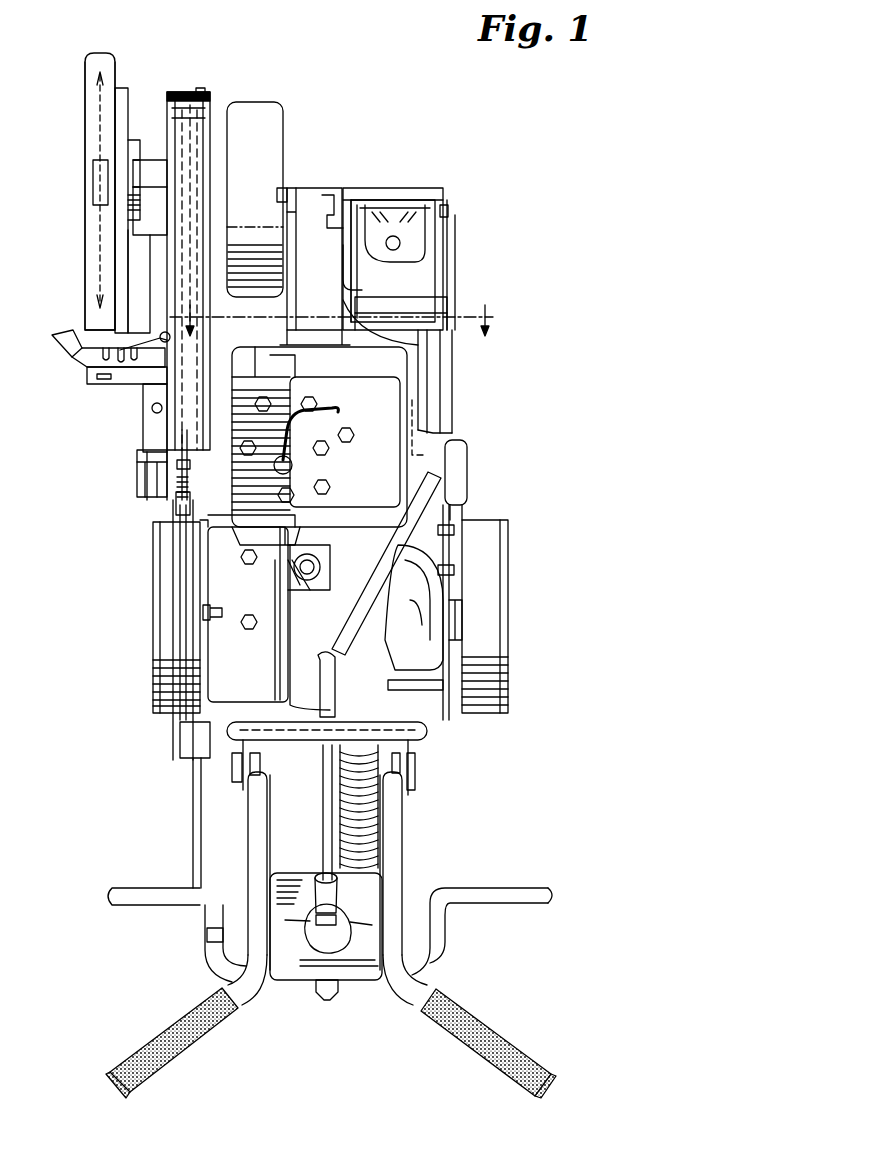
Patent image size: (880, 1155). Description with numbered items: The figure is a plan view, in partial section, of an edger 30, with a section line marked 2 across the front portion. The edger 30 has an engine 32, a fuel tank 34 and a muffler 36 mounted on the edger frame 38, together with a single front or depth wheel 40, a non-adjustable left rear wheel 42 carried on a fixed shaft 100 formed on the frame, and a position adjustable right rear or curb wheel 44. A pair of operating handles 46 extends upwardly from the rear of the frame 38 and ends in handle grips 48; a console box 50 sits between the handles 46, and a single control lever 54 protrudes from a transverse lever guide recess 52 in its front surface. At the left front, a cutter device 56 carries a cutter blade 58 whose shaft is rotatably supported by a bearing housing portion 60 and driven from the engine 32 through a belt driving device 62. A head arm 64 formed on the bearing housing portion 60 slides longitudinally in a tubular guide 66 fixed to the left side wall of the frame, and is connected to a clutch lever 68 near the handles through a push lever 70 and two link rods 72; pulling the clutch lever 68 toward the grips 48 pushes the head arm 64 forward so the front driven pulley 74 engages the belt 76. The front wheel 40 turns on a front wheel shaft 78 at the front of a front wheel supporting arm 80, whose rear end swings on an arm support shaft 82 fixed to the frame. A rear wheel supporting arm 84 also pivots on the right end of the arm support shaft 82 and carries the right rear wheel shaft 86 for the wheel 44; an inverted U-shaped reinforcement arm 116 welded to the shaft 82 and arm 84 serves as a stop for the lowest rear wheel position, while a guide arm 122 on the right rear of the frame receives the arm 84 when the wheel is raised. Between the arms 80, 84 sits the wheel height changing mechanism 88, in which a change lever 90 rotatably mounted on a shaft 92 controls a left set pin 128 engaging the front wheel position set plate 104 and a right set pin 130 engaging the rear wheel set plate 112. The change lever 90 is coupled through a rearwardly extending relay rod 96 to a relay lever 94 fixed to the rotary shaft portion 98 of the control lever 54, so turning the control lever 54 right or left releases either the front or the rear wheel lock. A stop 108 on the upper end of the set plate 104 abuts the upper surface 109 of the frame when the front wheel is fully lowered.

The edger 30 is at (518, 135).
The engine 32 is at (319, 446).
The fuel tank 34 is at (440, 640).
The muffler 36 is at (247, 608).
The edger frame 38 is at (508, 690).
The front wheel 40 is at (250, 102).
The left rear wheel 42 is at (153, 660).
The right rear wheel 44 is at (508, 528).
The operating handles 46 is at (248, 860).
The handle grips 48 is at (155, 1028).
The console box 50 is at (362, 985).
The lever guide recess 52 is at (298, 932).
The control lever 54 is at (322, 878).
The cutter device 56 is at (72, 62).
The cutter blade 58 is at (85, 92).
The bearing housing portion 60 is at (152, 160).
The belt driving device 62 is at (160, 385).
The head arm 64 is at (155, 260).
The tubular guide 66 is at (182, 445).
The clutch lever 68 is at (205, 962).
The push lever 70 is at (138, 472).
The link rods 72 is at (185, 735).
The front driven pulley 74 is at (196, 92).
The belt 76 is at (185, 95).
The front wheel shaft 78 is at (278, 200).
The front wheel supporting arm 80 is at (296, 190).
The arm support shaft 82 is at (287, 312).
The rear wheel supporting arm 84 is at (453, 390).
The right rear wheel shaft 86 is at (420, 730).
The wheel height changing mechanism 88 is at (388, 152).
The change lever 90 is at (395, 210).
The shaft 92 is at (391, 250).
The relay lever 94 is at (372, 644).
The relay rod 96 is at (455, 506).
The rotary shaft portion 98 is at (340, 786).
The fixed shaft 100 is at (218, 608).
The front wheel position set plate 104 is at (343, 240).
The stop 108 is at (398, 344).
The upper surface 109 is at (343, 260).
The rear wheel set plate 112 is at (450, 238).
The reinforcement arm 116 is at (400, 300).
The guide arm 122 is at (450, 555).
The set pin 128 is at (355, 250).
The set pin 130 is at (450, 212).
The section line 2- 2 is at (331, 308).